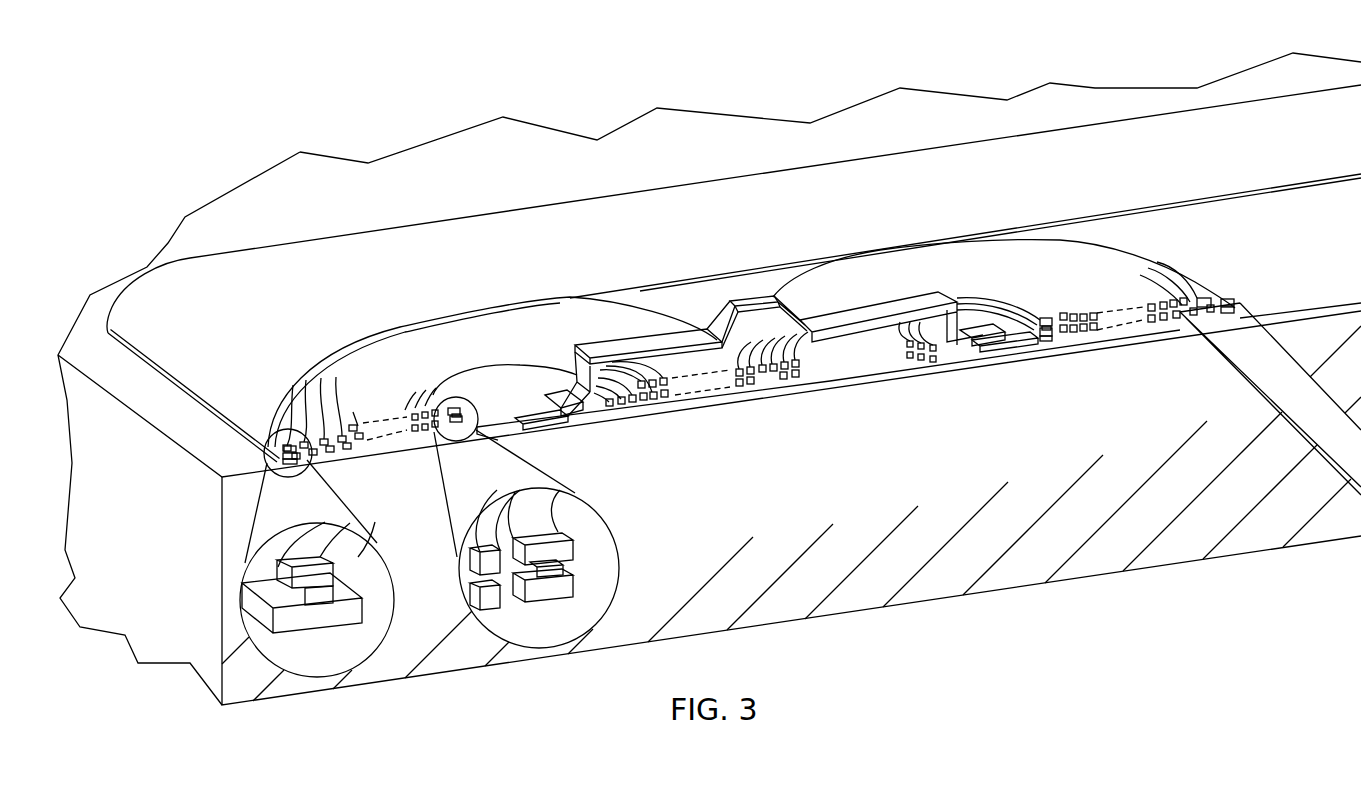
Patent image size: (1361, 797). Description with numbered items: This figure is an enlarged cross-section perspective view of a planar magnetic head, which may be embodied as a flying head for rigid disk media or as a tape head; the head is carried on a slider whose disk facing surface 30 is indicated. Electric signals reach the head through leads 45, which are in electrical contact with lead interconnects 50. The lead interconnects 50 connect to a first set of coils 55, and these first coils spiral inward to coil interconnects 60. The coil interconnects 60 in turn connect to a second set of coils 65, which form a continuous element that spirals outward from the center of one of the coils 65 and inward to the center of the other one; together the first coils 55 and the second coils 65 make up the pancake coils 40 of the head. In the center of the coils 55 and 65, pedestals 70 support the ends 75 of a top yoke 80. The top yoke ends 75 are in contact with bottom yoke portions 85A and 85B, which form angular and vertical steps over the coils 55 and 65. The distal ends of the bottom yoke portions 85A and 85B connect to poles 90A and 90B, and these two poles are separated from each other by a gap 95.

The disk facing surface 30 is at (243, 165).
The pancake coils 40 is at (455, 323).
The leads 45 is at (398, 237).
The lead interconnects 50 is at (292, 462).
The first set of coils 55 is at (282, 432).
The coil interconnects 60 is at (466, 425).
The second set of coils 65 is at (448, 407).
The pedestals 70 is at (537, 413).
The ends of top yoke 75 is at (572, 407).
The top yoke 80 is at (667, 410).
The bottom yoke portion 85A is at (655, 337).
The bottom yoke portion 85B is at (858, 305).
The pole 90A is at (727, 305).
The pole 90B is at (782, 296).
The gap 95 is at (757, 297).